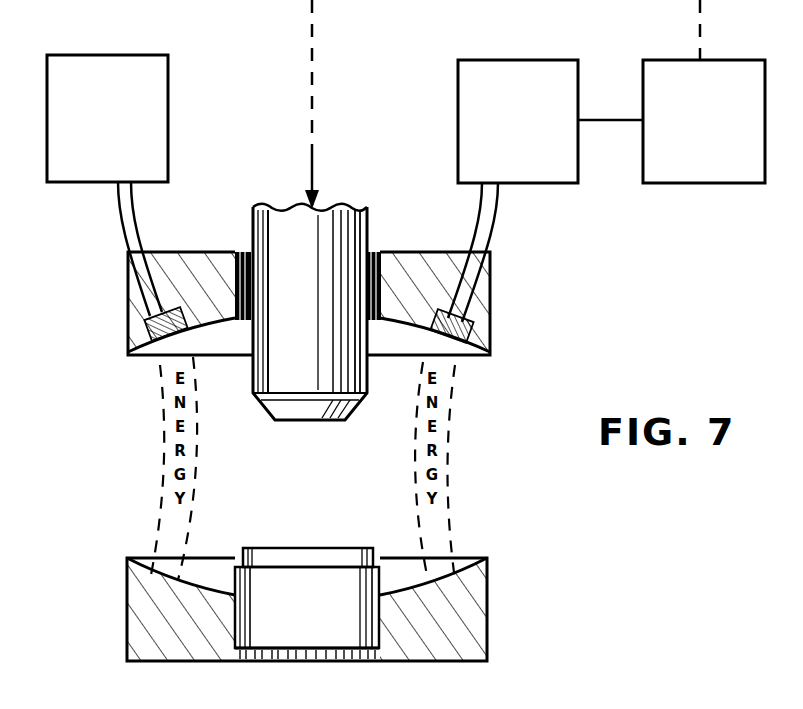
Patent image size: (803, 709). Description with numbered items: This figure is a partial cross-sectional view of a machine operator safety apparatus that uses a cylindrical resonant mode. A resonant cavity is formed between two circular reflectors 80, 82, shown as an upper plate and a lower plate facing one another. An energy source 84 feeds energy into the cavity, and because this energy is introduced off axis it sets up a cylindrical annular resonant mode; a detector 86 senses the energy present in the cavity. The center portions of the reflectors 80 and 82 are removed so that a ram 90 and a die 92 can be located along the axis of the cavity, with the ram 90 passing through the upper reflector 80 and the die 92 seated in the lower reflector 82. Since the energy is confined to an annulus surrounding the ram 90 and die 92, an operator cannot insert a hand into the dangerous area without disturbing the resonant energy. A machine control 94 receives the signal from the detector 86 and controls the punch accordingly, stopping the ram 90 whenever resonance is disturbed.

The circular reflector 80 is at (128, 308).
The circular reflector 82 is at (127, 597).
The energy source 84 is at (128, 55).
The detector 86 is at (545, 60).
The ram 90 is at (253, 372).
The die 92 is at (384, 585).
The machine control 94 is at (720, 60).